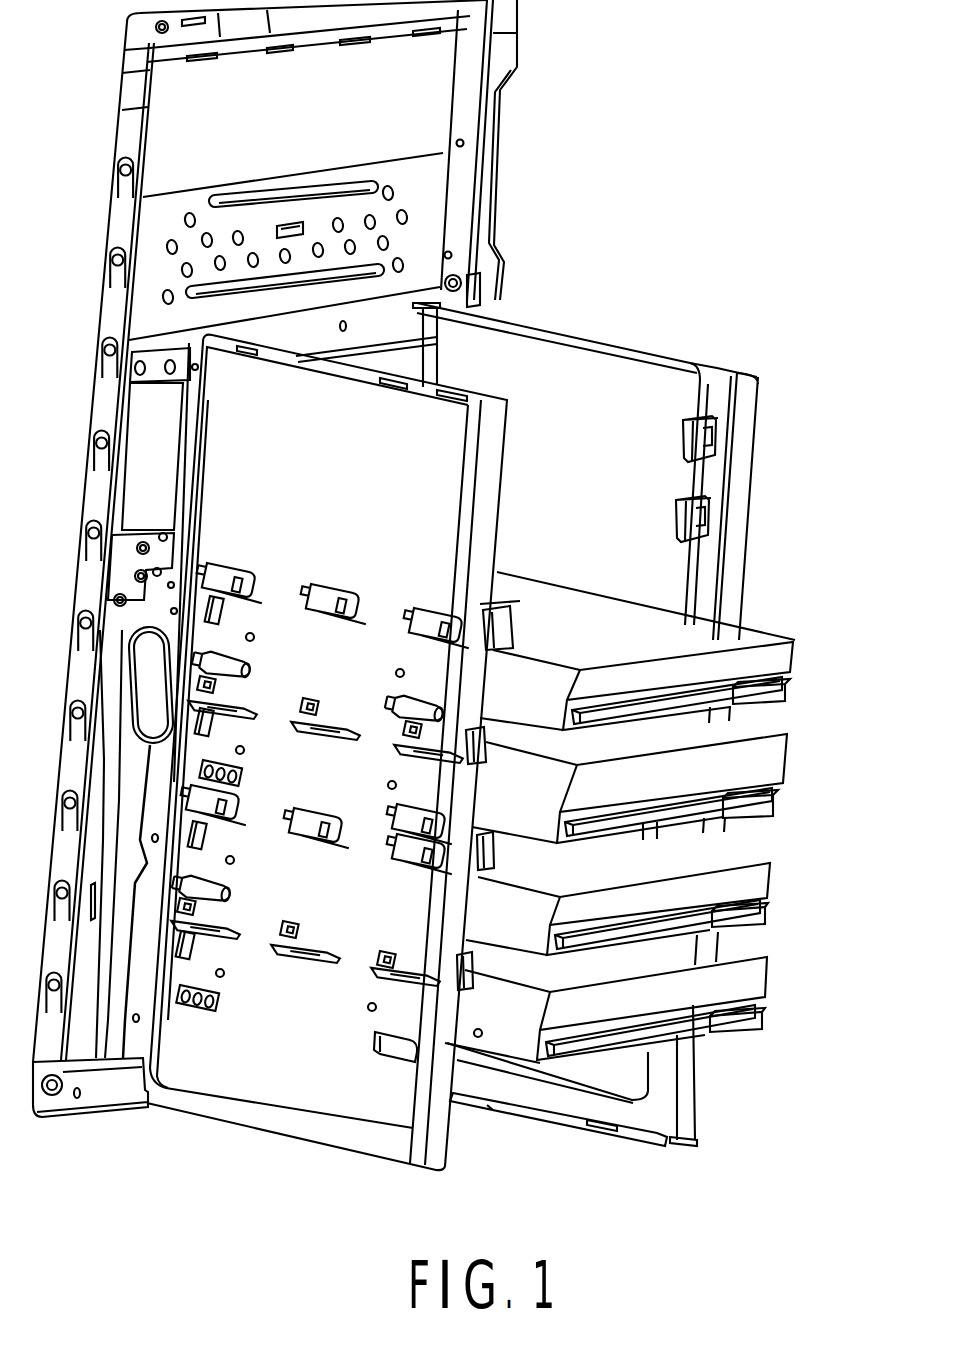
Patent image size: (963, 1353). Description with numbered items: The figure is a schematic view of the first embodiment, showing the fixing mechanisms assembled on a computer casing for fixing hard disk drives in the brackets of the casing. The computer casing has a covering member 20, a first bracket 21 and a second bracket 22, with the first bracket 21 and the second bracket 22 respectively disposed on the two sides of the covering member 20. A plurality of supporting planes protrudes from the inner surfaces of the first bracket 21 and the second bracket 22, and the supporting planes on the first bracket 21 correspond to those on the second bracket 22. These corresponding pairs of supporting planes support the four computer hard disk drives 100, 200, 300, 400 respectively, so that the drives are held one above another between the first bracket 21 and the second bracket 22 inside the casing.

The covering member 20 is at (153, 304).
The first bracket 21 is at (327, 1097).
The second bracket 22 is at (665, 388).
The hard disk drive 100 is at (707, 643).
The hard disk drive 200 is at (720, 738).
The hard disk drive 300 is at (717, 861).
The hard disk drive 400 is at (713, 960).